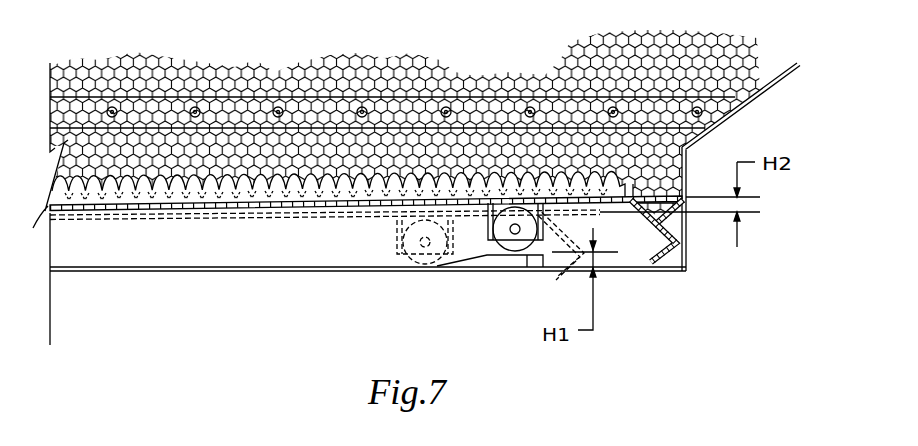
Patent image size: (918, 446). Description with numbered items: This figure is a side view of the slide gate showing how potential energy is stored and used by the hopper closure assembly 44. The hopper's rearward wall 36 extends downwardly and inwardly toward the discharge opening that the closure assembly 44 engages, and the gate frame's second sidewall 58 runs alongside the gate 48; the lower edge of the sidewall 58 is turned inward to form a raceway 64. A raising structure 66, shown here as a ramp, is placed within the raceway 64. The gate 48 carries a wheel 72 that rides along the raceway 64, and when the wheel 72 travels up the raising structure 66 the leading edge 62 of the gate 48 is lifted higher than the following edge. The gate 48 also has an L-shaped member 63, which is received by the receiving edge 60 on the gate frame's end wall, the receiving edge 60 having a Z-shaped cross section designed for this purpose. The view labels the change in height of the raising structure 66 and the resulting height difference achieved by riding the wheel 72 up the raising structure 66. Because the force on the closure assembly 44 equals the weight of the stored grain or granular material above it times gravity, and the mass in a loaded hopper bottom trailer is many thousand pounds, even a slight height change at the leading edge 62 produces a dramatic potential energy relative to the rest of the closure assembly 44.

The rearward wall 36 is at (770, 81).
The hopper closure assembly 44 is at (456, 65).
The gate 48 is at (440, 195).
The second sidewall 58 is at (242, 107).
The receiving edge 60 is at (673, 226).
The leading edge 62 is at (632, 193).
The L-shaped member 63 is at (647, 218).
The raceway 64 is at (203, 247).
The raising structure 66 is at (529, 260).
The wheel 72 is at (514, 252).